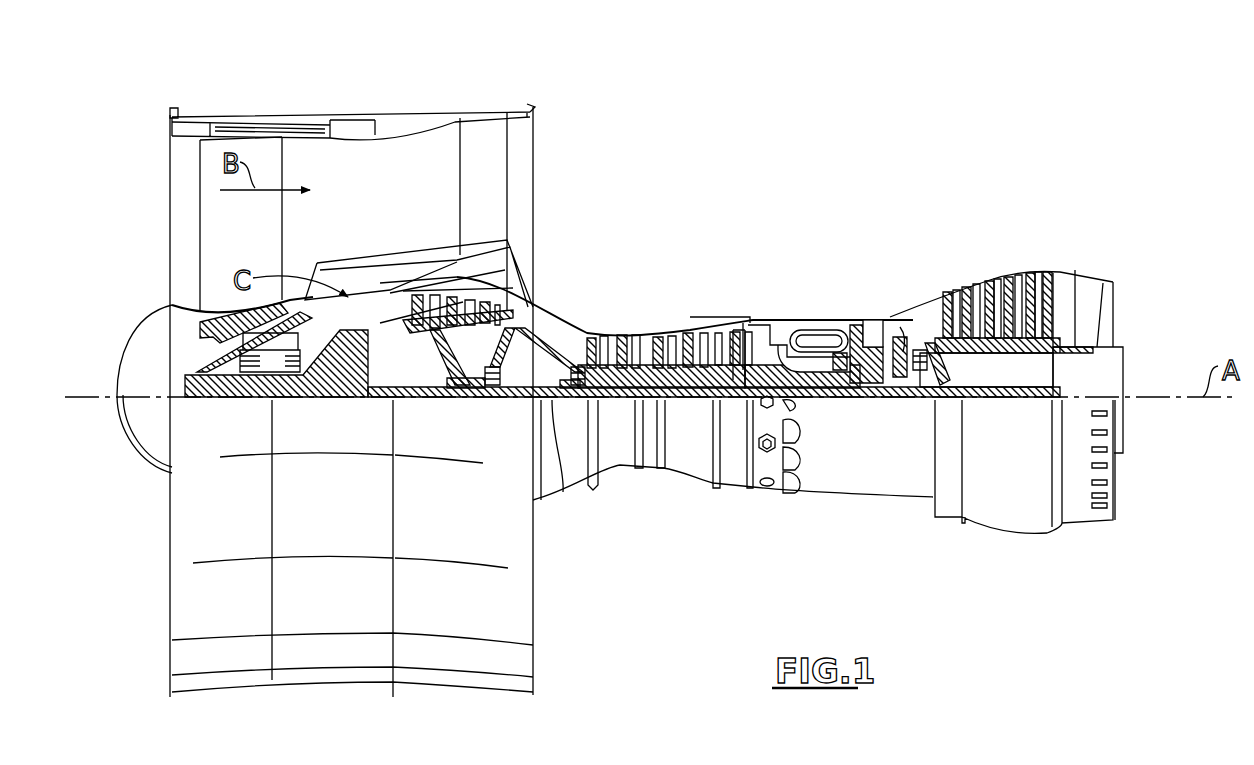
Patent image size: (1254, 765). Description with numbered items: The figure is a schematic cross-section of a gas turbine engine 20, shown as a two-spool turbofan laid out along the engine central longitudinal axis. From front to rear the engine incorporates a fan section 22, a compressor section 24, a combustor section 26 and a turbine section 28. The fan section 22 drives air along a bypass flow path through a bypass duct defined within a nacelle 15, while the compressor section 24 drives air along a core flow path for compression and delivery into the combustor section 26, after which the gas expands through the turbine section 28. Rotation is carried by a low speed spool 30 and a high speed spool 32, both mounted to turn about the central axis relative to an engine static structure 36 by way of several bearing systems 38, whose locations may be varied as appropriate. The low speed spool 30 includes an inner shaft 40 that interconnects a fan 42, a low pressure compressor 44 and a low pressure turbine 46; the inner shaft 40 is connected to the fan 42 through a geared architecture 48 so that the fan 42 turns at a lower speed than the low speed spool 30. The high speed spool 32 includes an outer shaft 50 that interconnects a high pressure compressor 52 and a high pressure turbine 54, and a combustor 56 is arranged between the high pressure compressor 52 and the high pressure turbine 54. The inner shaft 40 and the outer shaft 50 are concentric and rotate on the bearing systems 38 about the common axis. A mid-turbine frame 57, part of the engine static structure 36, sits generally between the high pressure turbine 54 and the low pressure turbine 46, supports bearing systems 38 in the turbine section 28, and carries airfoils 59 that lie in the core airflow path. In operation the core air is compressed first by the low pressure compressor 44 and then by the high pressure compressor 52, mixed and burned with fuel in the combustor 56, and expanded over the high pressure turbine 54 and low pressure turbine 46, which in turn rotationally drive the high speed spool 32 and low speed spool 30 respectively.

The nacelle 15 is at (352, 118).
The gas turbine engine 20 is at (818, 162).
The fan section 22 is at (280, 105).
The compressor section 24 is at (584, 303).
The combustor section 26 is at (806, 293).
The turbine section 28 is at (951, 255).
The low speed spool 30 is at (692, 406).
The high speed spool 32 is at (730, 380).
The engine static structure 36 is at (733, 489).
The bearing systems 38 is at (495, 387).
The inner shaft 40 is at (553, 402).
The fan 42 is at (256, 245).
The low pressure compressor 44 is at (455, 307).
The low pressure turbine 46 is at (1003, 283).
The geared architecture 48 is at (358, 383).
The outer shaft 50 is at (815, 388).
The high pressure compressor 52 is at (667, 360).
The high pressure turbine 54 is at (876, 320).
The combustor 56 is at (805, 337).
The mid-turbine frame 57 is at (915, 303).
The airfoils 59 is at (940, 352).